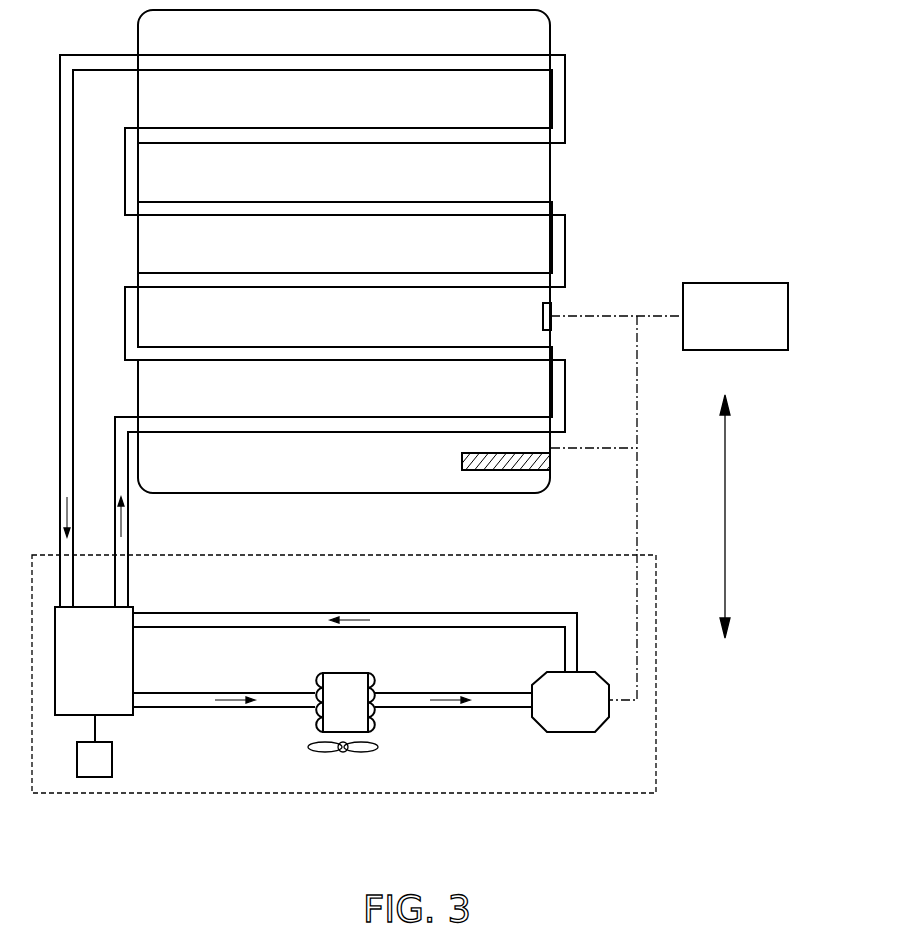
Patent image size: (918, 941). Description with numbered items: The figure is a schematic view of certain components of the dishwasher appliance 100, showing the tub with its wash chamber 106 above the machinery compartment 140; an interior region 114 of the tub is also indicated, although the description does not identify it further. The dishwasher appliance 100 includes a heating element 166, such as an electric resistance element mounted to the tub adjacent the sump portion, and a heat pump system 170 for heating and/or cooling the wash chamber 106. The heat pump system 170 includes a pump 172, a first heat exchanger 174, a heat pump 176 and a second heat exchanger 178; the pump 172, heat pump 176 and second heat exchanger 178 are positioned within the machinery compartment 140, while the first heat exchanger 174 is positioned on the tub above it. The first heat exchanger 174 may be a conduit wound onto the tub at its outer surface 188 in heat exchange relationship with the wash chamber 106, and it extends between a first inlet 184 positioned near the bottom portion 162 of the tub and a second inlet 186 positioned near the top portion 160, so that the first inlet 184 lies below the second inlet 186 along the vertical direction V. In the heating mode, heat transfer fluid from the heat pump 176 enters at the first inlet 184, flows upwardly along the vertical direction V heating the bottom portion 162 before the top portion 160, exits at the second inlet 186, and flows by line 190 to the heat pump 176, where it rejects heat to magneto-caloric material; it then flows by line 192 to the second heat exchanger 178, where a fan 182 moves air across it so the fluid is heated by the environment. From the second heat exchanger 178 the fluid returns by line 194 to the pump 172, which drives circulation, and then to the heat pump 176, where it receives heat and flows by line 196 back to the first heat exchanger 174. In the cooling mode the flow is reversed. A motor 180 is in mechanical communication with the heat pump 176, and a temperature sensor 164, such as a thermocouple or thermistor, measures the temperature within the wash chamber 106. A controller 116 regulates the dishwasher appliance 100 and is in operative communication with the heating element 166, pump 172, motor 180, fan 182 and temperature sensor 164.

The dishwasher appliance 100 is at (632, 101).
The wash chamber 106 is at (138, 255).
The chilled chamber 114 is at (188, 475).
The controller 116 is at (669, 491).
The machinery compartment 140 is at (535, 553).
The top portion 160 is at (564, 40).
The bottom portion 162 is at (560, 473).
The temperature sensor 164 is at (548, 308).
The heating element 166 is at (462, 463).
The heat pump system 170 is at (56, 746).
The pump 172 is at (575, 732).
The first heat exchanger 174 is at (385, 137).
The heat pump 176 is at (133, 655).
The second heat exchanger 178 is at (345, 673).
The motor 180 is at (112, 760).
The fan 182 is at (348, 752).
The first inlet 184 is at (148, 420).
The second inlet 186 is at (127, 58).
The outer surface 188 is at (126, 369).
The line 190 is at (74, 210).
The line 192 is at (155, 708).
The line 194 is at (340, 615).
The line 196 is at (128, 568).
The vertical direction V is at (727, 515).